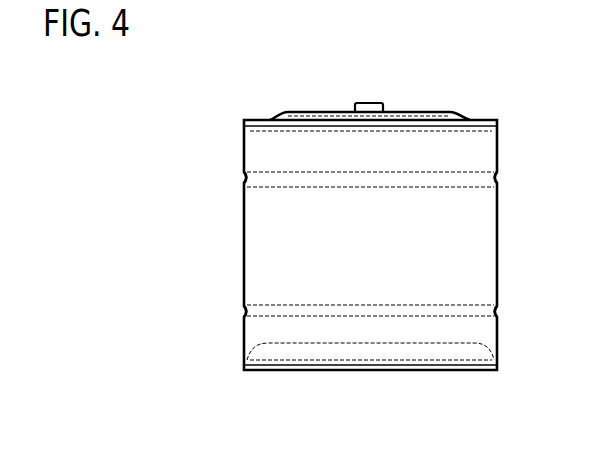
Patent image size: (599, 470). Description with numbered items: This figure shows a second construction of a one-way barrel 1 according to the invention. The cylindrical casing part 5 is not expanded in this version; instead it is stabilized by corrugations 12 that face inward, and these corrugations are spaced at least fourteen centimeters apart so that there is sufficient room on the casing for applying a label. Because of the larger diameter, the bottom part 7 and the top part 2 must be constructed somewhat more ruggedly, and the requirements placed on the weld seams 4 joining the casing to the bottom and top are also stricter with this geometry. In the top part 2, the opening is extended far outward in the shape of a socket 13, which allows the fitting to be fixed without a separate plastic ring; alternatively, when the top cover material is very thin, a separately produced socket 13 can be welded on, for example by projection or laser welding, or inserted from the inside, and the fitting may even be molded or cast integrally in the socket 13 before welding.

The one-way barrel 1 is at (500, 252).
The top part 2 is at (450, 111).
The weld seams 4 is at (498, 121).
The cylindrical casing part 5 is at (473, 222).
The bottom part 7 is at (391, 332).
The corrugations 12 is at (242, 178).
The socket 13 is at (383, 103).